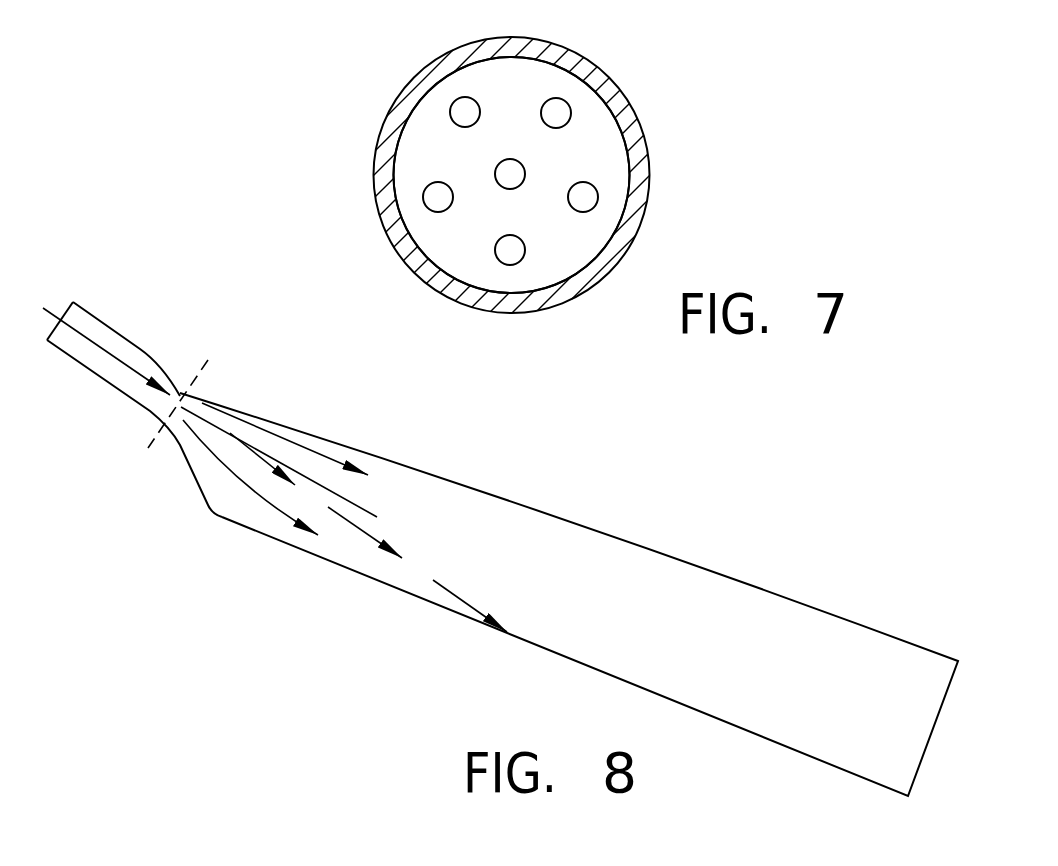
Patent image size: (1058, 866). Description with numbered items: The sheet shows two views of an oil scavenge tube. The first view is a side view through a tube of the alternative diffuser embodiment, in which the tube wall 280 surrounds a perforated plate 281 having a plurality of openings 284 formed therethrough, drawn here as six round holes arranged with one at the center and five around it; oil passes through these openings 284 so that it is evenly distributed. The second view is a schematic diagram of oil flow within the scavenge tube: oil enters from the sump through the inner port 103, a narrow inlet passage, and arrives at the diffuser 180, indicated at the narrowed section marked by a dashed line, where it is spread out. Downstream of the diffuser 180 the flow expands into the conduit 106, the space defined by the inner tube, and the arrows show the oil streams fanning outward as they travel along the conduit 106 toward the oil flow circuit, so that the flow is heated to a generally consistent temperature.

In FIG. 7, the nozzle body 280 is at (585, 142).
In FIG. 7, the perforated plate 281 is at (528, 208).
In FIG. 7, the openings 284 is at (455, 124).
In FIG. 8, the inner port 103 is at (64, 315).
In FIG. 8, the diffuser 180 is at (187, 395).
In FIG. 8, the conduit 106 is at (540, 573).